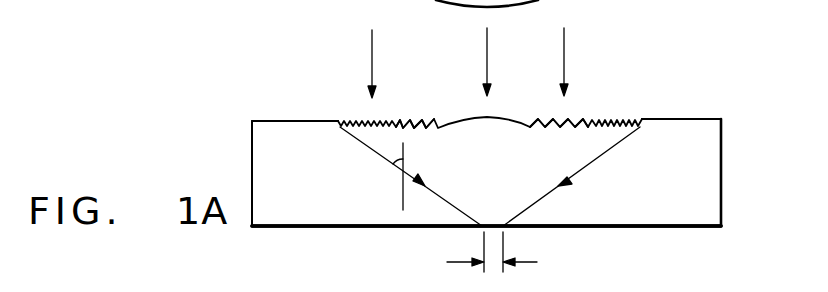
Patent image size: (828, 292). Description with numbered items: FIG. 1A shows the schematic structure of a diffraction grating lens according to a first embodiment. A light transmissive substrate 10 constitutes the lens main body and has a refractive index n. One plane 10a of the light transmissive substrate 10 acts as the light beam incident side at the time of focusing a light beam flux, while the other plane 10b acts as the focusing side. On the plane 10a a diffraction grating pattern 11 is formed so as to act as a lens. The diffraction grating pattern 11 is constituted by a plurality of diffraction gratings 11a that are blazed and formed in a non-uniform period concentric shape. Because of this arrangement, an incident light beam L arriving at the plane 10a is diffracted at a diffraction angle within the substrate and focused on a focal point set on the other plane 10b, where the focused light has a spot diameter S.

The light transmissive substrate 10 is at (722, 141).
The plane 10a is at (694, 118).
The other plane 10b is at (678, 228).
The diffraction grating pattern 11 is at (392, 101).
The diffraction gratings 11a is at (438, 121).
The incident light beam L is at (564, 36).
The spot diameter S is at (493, 252).